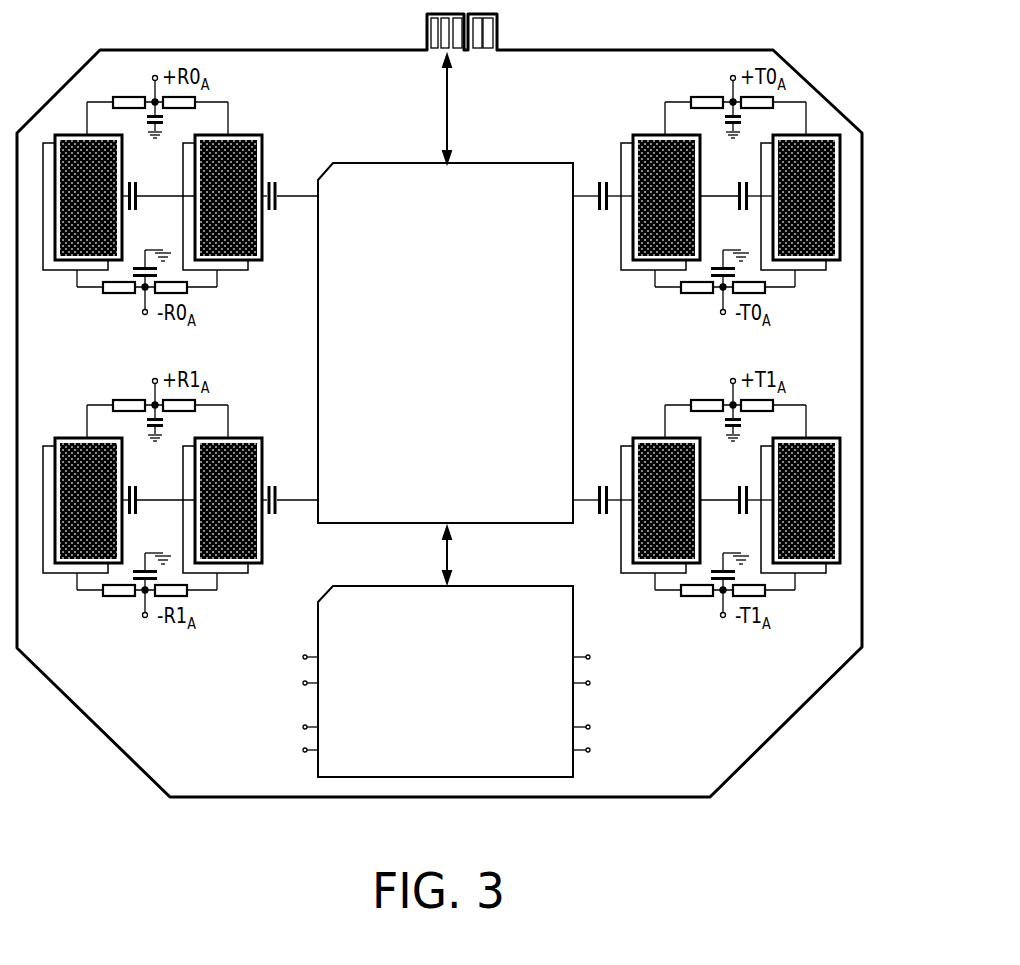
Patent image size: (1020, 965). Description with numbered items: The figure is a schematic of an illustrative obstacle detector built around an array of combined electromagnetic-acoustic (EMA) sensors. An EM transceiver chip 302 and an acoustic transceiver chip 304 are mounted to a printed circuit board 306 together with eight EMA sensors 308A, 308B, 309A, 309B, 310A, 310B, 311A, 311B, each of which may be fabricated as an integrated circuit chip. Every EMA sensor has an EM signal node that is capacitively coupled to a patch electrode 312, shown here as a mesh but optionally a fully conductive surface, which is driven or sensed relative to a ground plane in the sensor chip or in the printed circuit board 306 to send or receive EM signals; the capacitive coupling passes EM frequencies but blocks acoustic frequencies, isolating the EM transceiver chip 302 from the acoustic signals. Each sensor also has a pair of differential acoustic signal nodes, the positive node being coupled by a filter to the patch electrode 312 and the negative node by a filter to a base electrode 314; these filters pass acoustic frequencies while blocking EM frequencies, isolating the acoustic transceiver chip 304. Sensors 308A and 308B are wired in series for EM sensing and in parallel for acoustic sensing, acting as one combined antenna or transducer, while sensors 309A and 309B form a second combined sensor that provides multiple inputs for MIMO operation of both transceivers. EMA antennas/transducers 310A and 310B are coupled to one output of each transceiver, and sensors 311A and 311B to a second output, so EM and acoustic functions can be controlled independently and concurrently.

The EM transceiver chip 302 is at (445, 332).
The acoustic transceiver chip 304 is at (446, 670).
The printed circuit board 306 is at (412, 35).
The EMA sensor 308A is at (107, 194).
The EMA sensor 308B is at (243, 215).
The EMA sensor 309A is at (107, 497).
The EMA sensor 309B is at (233, 497).
The EMA antenna/transducer 310A is at (685, 194).
The EMA antenna/transducer 310B is at (838, 165).
The EMA sensor 311A is at (685, 497).
The EMA sensor 311B is at (838, 468).
The patch electrode 312 is at (260, 258).
The base electrode 314 is at (248, 272).